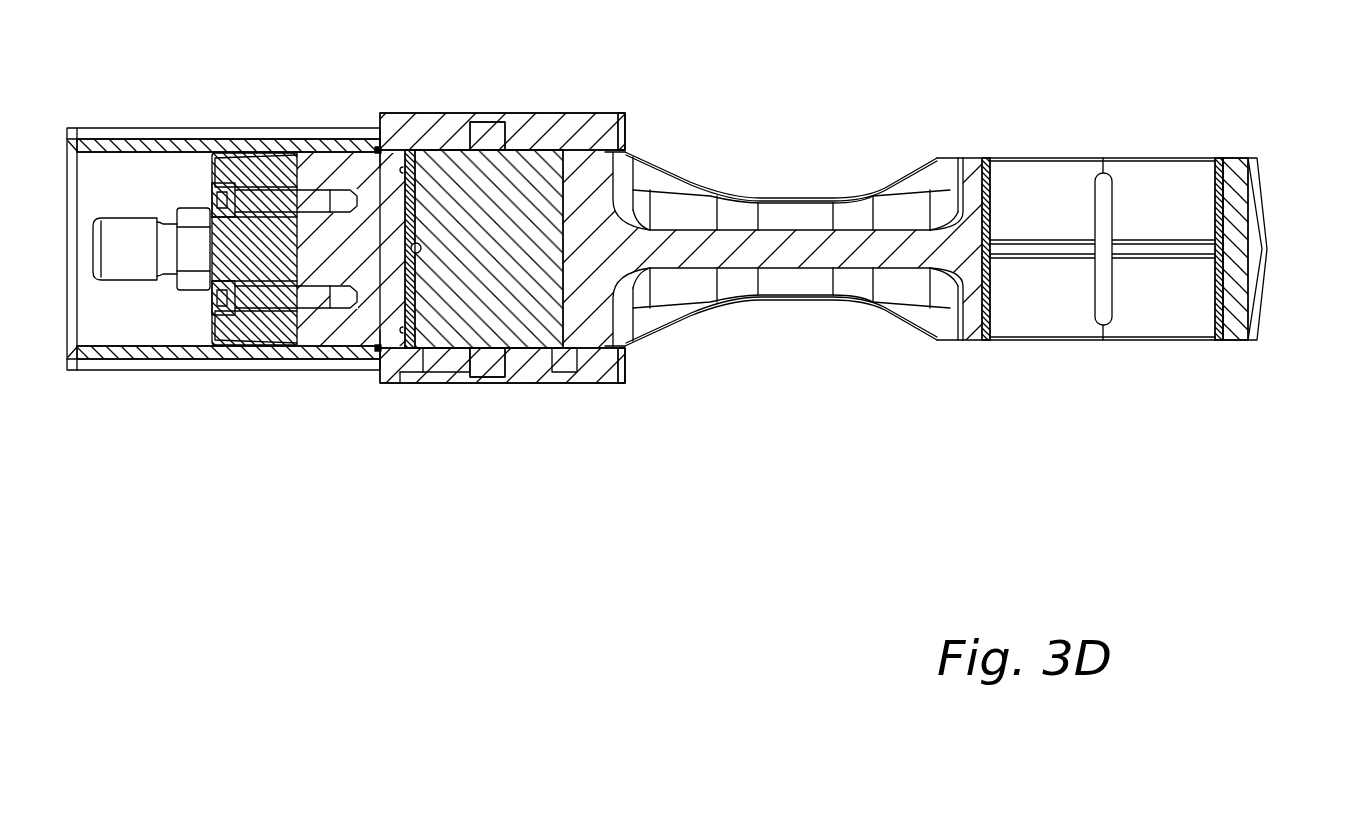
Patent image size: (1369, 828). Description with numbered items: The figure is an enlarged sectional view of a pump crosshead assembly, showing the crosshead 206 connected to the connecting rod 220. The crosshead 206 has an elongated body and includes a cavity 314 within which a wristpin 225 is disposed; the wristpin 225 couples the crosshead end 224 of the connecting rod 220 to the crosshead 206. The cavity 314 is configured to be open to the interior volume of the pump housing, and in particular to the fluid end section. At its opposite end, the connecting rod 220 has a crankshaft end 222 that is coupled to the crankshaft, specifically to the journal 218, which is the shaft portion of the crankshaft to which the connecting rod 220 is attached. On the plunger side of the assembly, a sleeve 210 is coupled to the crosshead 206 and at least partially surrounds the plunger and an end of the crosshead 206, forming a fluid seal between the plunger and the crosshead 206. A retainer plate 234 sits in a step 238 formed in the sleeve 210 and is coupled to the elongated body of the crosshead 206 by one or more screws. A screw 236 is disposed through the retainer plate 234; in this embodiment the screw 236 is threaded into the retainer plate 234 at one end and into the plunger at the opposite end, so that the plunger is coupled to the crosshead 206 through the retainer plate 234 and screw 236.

The sleeve 210 is at (146, 128).
The step 238 is at (318, 138).
The cavity 314 is at (413, 197).
The crosshead 206 is at (521, 146).
The retainer plate 234 is at (213, 175).
The screw 236 is at (131, 270).
The wristpin 225 is at (463, 332).
The crosshead end 224 is at (658, 369).
The connecting rod 220 is at (804, 303).
The journal 218 is at (1240, 205).
The crankshaft end 222 is at (1262, 312).